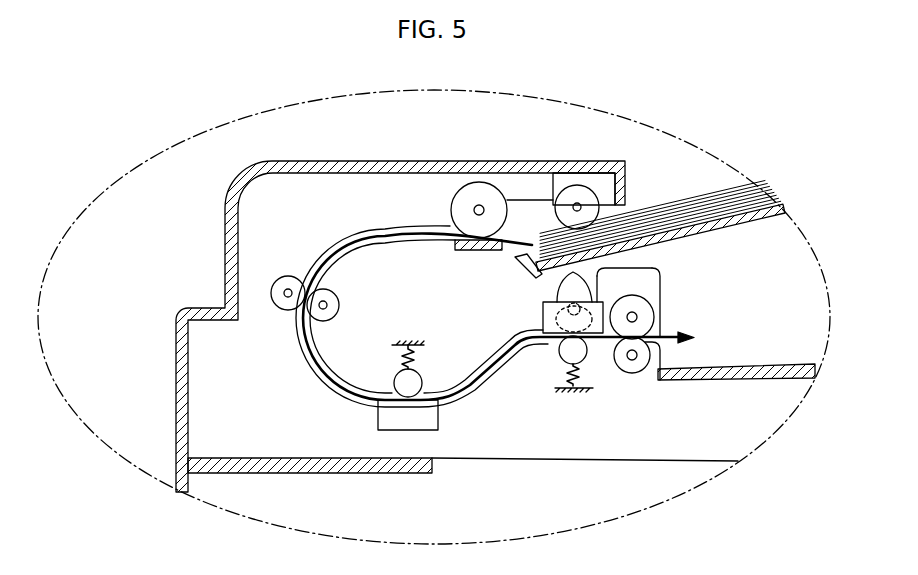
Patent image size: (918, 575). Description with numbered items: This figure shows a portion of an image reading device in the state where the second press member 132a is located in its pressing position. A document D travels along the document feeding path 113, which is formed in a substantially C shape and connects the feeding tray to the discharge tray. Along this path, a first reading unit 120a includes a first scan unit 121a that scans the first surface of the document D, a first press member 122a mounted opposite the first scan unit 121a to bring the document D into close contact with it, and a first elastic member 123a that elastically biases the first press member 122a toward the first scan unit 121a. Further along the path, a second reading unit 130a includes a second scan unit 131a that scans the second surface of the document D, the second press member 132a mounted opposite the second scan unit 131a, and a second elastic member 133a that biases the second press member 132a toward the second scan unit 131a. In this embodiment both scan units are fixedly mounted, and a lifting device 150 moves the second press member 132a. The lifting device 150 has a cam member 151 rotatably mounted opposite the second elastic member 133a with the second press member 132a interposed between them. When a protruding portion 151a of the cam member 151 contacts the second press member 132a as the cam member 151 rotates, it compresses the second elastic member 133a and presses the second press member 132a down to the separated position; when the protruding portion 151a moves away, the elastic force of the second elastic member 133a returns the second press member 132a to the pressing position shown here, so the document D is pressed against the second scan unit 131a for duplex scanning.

The document D is at (717, 195).
The document feeding path 113 is at (320, 376).
The first reading unit 120a is at (458, 412).
The first scan unit 121a is at (378, 410).
The first press member 122a is at (423, 382).
The first elastic member 123a is at (393, 357).
The second reading unit 130a is at (520, 310).
The second scan unit 131a is at (604, 315).
The second press member 132a is at (583, 358).
The second elastic member 133a is at (563, 378).
The lifting device 150 is at (612, 292).
The cam member 151 is at (557, 298).
The protruding portion 151a is at (605, 270).